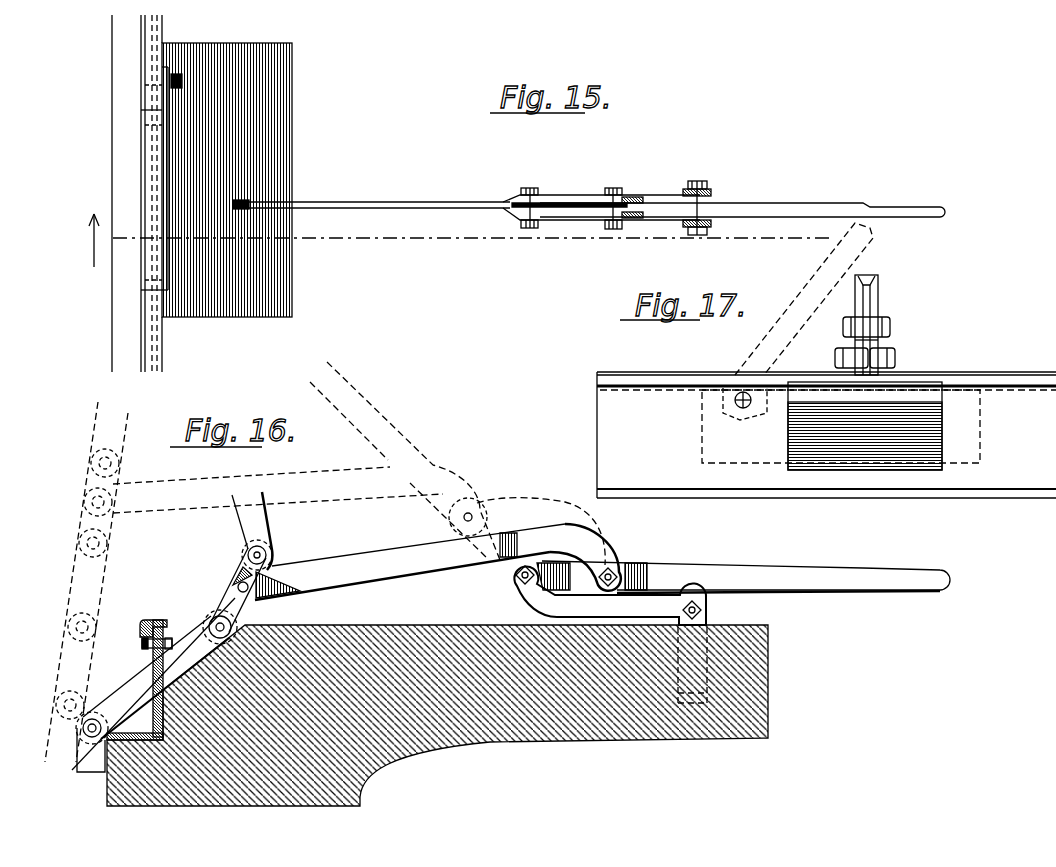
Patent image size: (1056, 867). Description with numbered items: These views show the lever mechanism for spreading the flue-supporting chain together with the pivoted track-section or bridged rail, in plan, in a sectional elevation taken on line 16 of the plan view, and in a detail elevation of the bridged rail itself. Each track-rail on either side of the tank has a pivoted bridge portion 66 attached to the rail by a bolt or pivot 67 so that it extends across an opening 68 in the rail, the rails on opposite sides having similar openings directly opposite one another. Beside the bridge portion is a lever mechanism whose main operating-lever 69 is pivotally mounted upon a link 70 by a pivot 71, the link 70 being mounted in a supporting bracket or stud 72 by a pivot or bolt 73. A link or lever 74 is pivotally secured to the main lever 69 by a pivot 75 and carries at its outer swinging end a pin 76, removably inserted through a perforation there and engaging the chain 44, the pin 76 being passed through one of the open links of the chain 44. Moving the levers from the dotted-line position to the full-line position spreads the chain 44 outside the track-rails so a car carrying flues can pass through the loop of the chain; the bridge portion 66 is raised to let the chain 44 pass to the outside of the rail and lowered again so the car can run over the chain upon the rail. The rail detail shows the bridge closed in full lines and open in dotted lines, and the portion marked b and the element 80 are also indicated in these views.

In FIG. 15, the section line 16 is at (86, 236).
In FIG. 16, the chain 44 is at (72, 568).
In FIG. 15, the pivoted bridge portion 66 is at (140, 178).
In FIG. 17, the pivoted bridge portion 66 is at (810, 293).
In FIG. 16, the pivoted bridge portion 66 is at (152, 619).
In FIG. 15, the bolt or pivot 67 is at (183, 80).
In FIG. 17, the bolt or pivot 67 is at (743, 410).
In FIG. 16, the bolt or pivot 67 is at (142, 646).
In FIG. 15, the opening 68 is at (227, 180).
In FIG. 17, the opening 68 is at (865, 426).
In FIG. 16, the opening 68 is at (197, 672).
In FIG. 15, the main operating-lever 69 is at (822, 203).
In FIG. 16, the main operating-lever 69 is at (387, 413).
In FIG. 15, the link 70 is at (651, 220).
In FIG. 17, the link 70 is at (893, 336).
In FIG. 16, the link 70 is at (533, 605).
In FIG. 15, the pivot 71 is at (531, 188).
In FIG. 17, the pivot 71 is at (851, 331).
In FIG. 16, the pivot 71 is at (511, 577).
In FIG. 15, the supporting bracket or stud 72 is at (713, 191).
In FIG. 17, the supporting bracket or stud 72 is at (896, 352).
In FIG. 16, the supporting bracket or stud 72 is at (709, 609).
In FIG. 15, the pivot or bolt 73 is at (700, 181).
In FIG. 17, the pivot or bolt 73 is at (836, 358).
In FIG. 16, the pivot or bolt 73 is at (693, 598).
In FIG. 15, the link or lever 74 is at (362, 202).
In FIG. 17, the link or lever 74 is at (880, 306).
In FIG. 16, the link or lever 74 is at (352, 567).
In FIG. 15, the pivot 75 is at (612, 188).
In FIG. 16, the pivot 75 is at (617, 570).
In FIG. 16, the pin 76 is at (89, 497).
In FIG. 15, the link 80 is at (122, 338).
In FIG. 16, the link 80 is at (110, 760).
In FIG. 15, the bar portion b is at (150, 344).
In FIG. 17, the bar portion b is at (665, 375).
In FIG. 16, the bar portion b is at (140, 627).